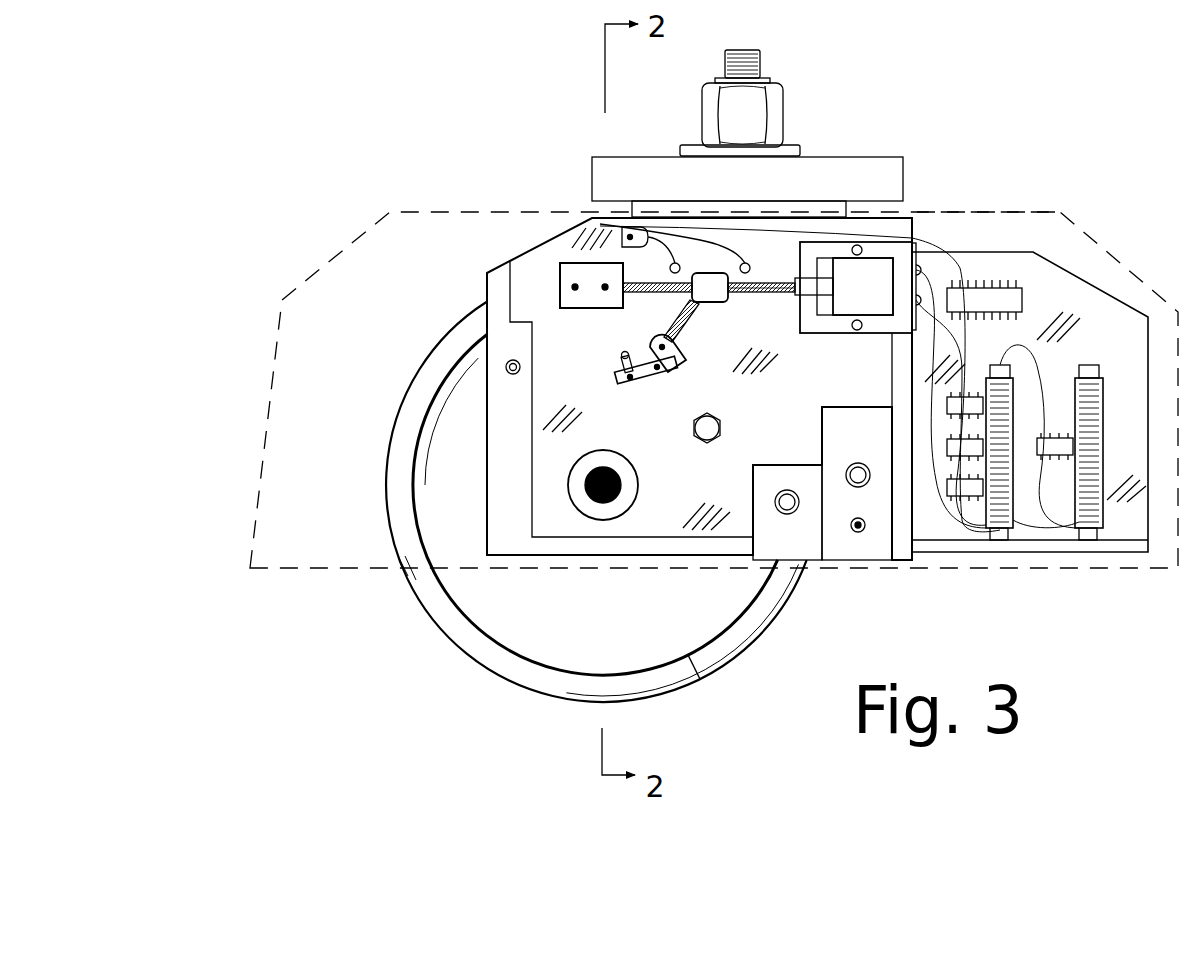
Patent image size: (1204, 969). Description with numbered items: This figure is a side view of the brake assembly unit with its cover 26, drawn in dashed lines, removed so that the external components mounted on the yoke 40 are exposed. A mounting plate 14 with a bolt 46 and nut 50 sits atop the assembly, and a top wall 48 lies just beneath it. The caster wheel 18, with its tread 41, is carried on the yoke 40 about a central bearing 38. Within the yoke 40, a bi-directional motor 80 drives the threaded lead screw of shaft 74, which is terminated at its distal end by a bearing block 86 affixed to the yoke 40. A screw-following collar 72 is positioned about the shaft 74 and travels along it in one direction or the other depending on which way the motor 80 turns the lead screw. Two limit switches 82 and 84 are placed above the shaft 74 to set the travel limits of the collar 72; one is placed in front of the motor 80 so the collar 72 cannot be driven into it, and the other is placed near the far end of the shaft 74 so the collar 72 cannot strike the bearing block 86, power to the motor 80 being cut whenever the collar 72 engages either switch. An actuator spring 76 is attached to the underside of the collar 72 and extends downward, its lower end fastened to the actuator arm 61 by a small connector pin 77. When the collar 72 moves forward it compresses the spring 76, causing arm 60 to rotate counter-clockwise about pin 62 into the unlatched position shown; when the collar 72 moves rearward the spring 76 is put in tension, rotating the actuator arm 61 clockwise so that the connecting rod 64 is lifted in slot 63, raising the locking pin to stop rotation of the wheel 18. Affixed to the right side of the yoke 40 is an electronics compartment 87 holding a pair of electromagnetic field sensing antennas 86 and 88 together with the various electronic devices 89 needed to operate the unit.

The mounting plate 14 is at (858, 157).
The wheel 18 is at (395, 550).
The cover 26 is at (262, 372).
The axle bearing 38 is at (638, 487).
The yoke 40 is at (486, 288).
The wheel tread 41 is at (712, 678).
The bolt 46 is at (724, 68).
The top wall 48 is at (918, 212).
The nut 50 is at (785, 118).
The arm 60 is at (607, 379).
The actuator arm 61 is at (654, 378).
The pin 62 is at (662, 372).
The slot 63 is at (620, 358).
The connecting rod 64 is at (622, 384).
The screw-following collar 72 is at (716, 302).
The shaft 74 is at (764, 293).
The actuator spring 76 is at (678, 318).
The connector pin 77 is at (675, 352).
The bi-directional motor 80 is at (843, 333).
The limit switch 82 is at (662, 262).
The limit switch 84 is at (750, 268).
The bearing block 86 is at (560, 285).
The electronics compartment 87 is at (1072, 554).
The electromagnetic field sensing antenna 88 is at (1105, 455).
The electronic devices 89 is at (1022, 302).